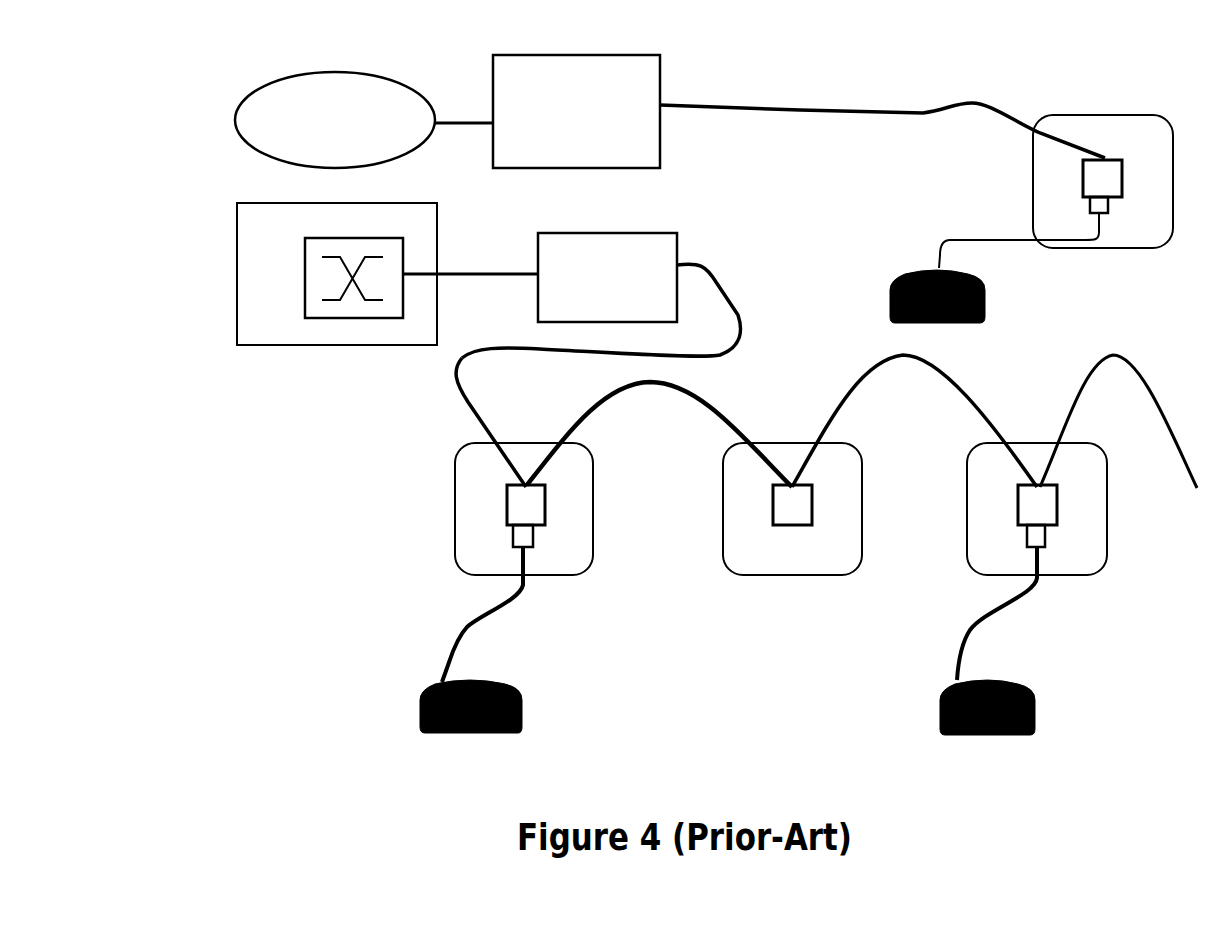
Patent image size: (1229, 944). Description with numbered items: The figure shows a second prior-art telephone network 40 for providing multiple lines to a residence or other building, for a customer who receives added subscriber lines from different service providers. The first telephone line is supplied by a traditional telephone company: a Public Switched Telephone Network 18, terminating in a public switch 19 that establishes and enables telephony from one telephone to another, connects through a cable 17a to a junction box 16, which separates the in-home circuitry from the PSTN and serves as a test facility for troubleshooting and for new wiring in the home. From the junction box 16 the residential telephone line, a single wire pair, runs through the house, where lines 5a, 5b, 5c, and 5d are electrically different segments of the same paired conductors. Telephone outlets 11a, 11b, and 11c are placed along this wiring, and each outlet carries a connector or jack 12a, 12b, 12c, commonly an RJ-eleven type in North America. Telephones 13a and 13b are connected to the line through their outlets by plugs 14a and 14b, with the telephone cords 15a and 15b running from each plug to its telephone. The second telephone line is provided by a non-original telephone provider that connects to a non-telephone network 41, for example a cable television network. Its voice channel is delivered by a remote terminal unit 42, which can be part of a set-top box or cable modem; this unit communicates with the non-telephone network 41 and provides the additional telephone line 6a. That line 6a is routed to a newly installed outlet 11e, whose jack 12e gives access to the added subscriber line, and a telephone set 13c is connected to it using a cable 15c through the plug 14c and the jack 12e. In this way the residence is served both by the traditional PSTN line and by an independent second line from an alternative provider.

The telephone network 40 is at (362, 637).
The non-telephone network 41 is at (262, 153).
The remote terminal unit 42 is at (493, 86).
The telephone line 6a is at (772, 112).
The telephone outlet 11a is at (598, 480).
The telephone outlet 11b is at (860, 478).
The telephone outlet 11c is at (1108, 478).
The telephone outlet 11e is at (1082, 119).
The connector 12a is at (547, 522).
The connector 12b is at (813, 522).
The connector 12c is at (1058, 522).
The connector 12e is at (1128, 197).
The telephone 13a is at (555, 722).
The telephone 13b is at (1065, 718).
The telephone set 13c is at (985, 300).
The connector 14a is at (510, 541).
The connector 14b is at (1027, 541).
The connector 14c is at (1090, 212).
The telephone cord 15a is at (468, 622).
The telephone cord 15b is at (960, 645).
The cable 15c is at (980, 242).
The junction box 16 is at (597, 233).
The cable 17a is at (480, 278).
The Public Switched Telephone Network 18 is at (236, 276).
The public switch 19 is at (305, 288).
The line 5a is at (468, 418).
The line 5b is at (577, 420).
The line 5c is at (843, 418).
The line 5d is at (1072, 410).